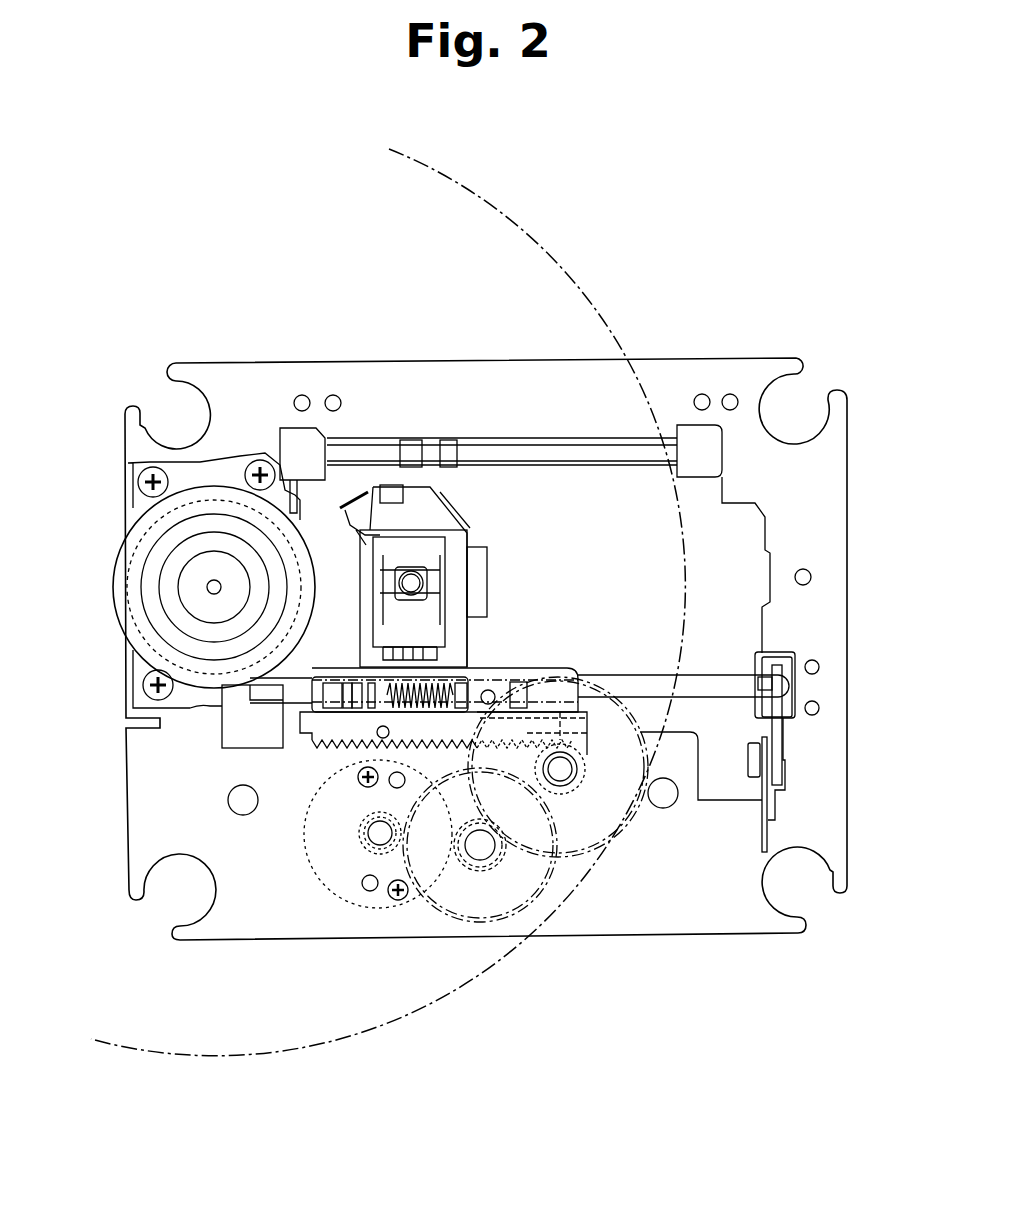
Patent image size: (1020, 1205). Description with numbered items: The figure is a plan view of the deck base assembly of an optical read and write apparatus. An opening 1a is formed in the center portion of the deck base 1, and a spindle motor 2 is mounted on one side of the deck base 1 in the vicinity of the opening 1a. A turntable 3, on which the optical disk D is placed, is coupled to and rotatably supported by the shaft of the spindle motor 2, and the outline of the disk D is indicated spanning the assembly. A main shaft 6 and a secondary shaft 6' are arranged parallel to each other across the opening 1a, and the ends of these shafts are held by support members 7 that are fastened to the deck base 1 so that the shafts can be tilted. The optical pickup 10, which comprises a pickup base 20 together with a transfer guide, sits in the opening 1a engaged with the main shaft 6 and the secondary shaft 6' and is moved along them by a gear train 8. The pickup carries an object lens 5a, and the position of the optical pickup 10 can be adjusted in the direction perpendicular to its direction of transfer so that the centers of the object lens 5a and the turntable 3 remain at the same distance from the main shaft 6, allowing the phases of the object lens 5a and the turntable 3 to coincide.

The deck base 1 is at (827, 434).
The opening 1a is at (749, 584).
The spindle motor 2 is at (130, 590).
The turntable 3 is at (125, 628).
The object lens 5a is at (402, 558).
The main shaft 6 is at (579, 635).
The secondary shaft 6' is at (527, 375).
The support members 7 is at (290, 437).
The gear train 8 is at (268, 902).
The optical pickup 10 is at (360, 478).
The pickup base 20 is at (433, 500).
The optical disk D is at (482, 210).